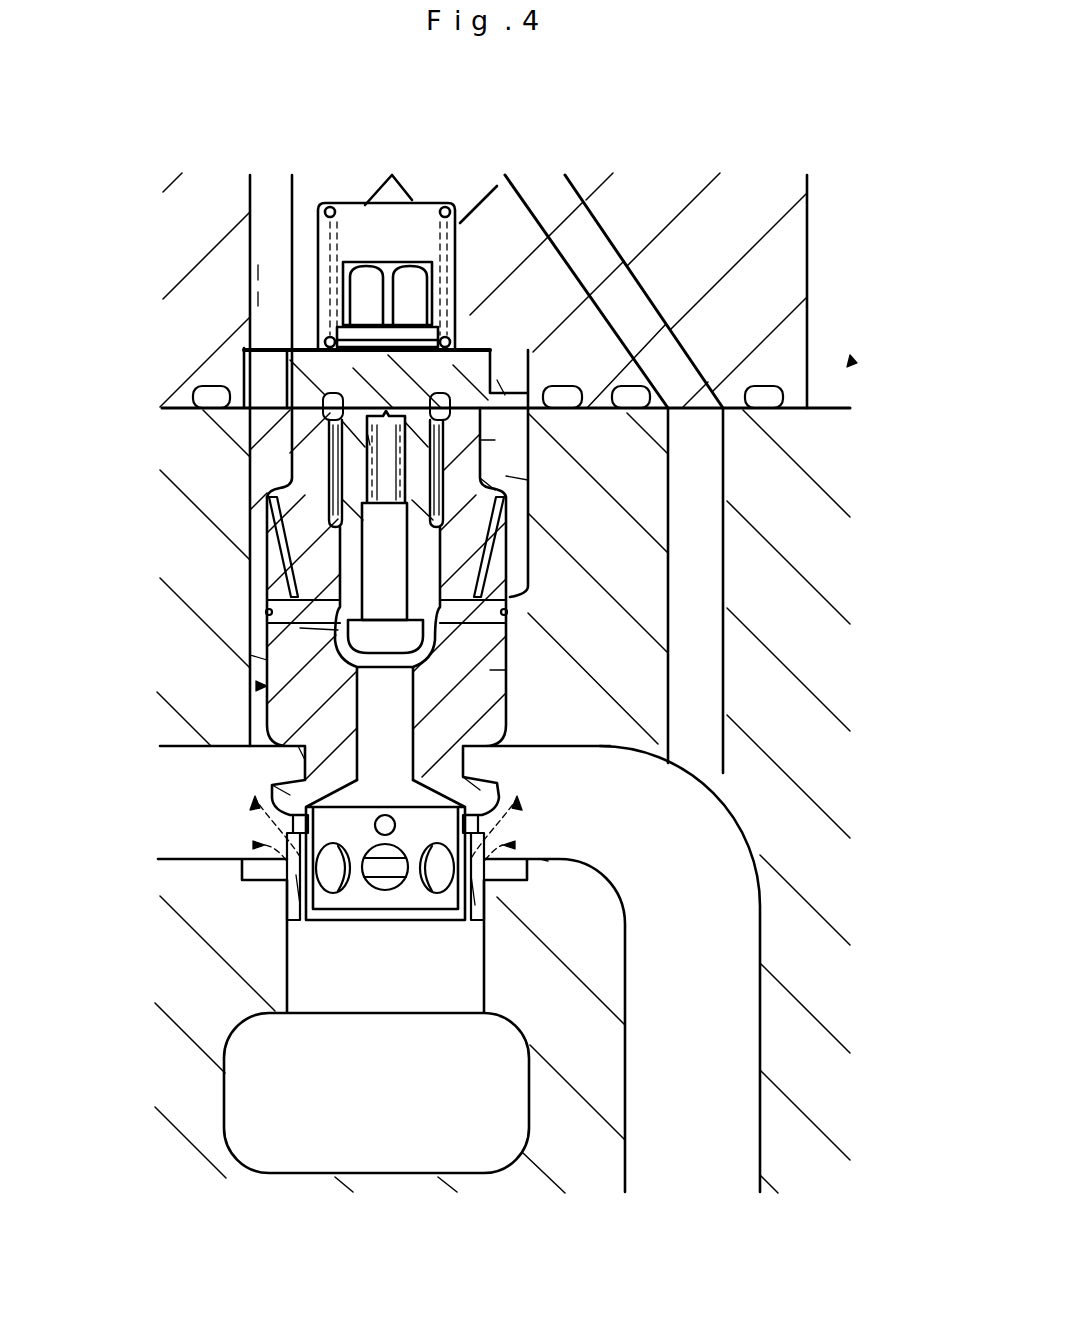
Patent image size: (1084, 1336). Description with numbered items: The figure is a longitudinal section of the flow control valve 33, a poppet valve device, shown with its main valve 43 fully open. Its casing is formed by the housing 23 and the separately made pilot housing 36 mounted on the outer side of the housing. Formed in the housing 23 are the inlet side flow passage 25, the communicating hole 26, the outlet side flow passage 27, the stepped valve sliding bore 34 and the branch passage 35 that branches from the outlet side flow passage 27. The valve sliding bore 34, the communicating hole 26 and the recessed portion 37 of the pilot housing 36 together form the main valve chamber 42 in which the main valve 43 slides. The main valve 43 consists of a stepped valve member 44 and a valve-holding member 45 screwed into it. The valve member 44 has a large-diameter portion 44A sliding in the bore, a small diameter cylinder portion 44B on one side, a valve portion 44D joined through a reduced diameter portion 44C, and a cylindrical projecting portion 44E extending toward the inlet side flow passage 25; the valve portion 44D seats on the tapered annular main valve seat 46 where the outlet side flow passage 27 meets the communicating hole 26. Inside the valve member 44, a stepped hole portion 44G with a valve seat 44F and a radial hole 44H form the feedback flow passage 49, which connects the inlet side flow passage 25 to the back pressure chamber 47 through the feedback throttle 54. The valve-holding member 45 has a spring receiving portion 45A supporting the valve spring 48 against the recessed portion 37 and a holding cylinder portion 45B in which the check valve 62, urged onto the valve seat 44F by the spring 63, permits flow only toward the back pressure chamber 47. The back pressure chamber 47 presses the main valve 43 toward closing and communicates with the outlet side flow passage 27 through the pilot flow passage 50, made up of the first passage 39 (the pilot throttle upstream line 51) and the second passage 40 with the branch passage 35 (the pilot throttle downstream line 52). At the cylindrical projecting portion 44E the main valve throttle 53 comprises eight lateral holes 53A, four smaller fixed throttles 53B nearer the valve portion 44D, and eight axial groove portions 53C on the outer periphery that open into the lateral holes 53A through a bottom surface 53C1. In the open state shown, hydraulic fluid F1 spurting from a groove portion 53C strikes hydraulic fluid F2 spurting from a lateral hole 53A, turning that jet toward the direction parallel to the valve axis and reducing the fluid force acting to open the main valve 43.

The housing 23 is at (803, 1015).
The inlet side flow passage 25 is at (240, 1095).
The communicating hole 26 is at (470, 985).
The outlet side flow passage 27 is at (525, 832).
The flow control valve 33 is at (850, 363).
The valve sliding bore 34 is at (266, 660).
The branch passage 35 is at (727, 783).
The pilot housing 36 is at (187, 332).
The recessed portion 37 is at (252, 368).
The first passage 39 is at (252, 216).
The second passage 40 is at (592, 213).
The main valve chamber 42 is at (506, 480).
The main valve 43 is at (260, 684).
The valve member 44 is at (285, 720).
The large-diameter portion 44A is at (470, 537).
The small diameter cylinder portion 44B is at (470, 443).
The reduced diameter portion 44C is at (303, 752).
The valve portion 44D is at (285, 792).
The cylindrical projecting portion 44E is at (280, 1015).
The valve seat 44F is at (506, 670).
The stepped hole portion 44G is at (463, 777).
The radial hole 44H is at (300, 628).
The valve-holding member 45 is at (407, 403).
The spring receiving portion 45A is at (328, 410).
The holding cylinder portion 45B is at (335, 510).
The main valve seat 46 is at (540, 860).
The back pressure chamber 47 is at (292, 358).
The valve spring 48 is at (328, 205).
The feedback flow passage 49 is at (268, 598).
The pilot flow passage 50 is at (258, 272).
The pilot throttle upstream line 51 is at (258, 300).
The pilot throttle downstream line 52 is at (612, 262).
The main valve throttle 53 is at (370, 922).
The lateral hole 53A is at (300, 905).
The fixed throttle 53B is at (300, 842).
The groove portion 53C is at (285, 924).
The bottom surface 53C1 is at (285, 917).
The feedback throttle 54 is at (278, 548).
The check valve 62 is at (400, 636).
The spring 63 is at (367, 436).
The hydraulic fluid F1 is at (252, 845).
The hydraulic fluid F2 is at (250, 822).